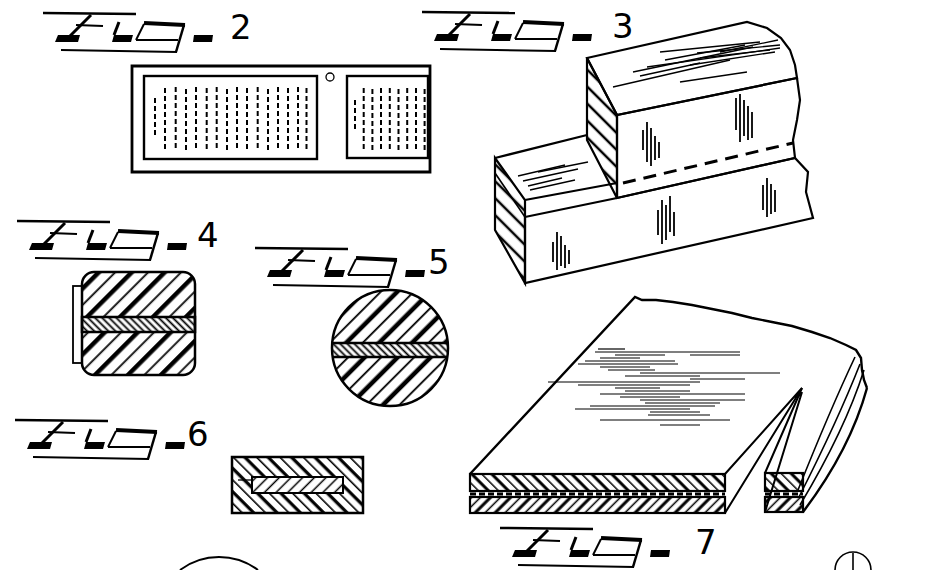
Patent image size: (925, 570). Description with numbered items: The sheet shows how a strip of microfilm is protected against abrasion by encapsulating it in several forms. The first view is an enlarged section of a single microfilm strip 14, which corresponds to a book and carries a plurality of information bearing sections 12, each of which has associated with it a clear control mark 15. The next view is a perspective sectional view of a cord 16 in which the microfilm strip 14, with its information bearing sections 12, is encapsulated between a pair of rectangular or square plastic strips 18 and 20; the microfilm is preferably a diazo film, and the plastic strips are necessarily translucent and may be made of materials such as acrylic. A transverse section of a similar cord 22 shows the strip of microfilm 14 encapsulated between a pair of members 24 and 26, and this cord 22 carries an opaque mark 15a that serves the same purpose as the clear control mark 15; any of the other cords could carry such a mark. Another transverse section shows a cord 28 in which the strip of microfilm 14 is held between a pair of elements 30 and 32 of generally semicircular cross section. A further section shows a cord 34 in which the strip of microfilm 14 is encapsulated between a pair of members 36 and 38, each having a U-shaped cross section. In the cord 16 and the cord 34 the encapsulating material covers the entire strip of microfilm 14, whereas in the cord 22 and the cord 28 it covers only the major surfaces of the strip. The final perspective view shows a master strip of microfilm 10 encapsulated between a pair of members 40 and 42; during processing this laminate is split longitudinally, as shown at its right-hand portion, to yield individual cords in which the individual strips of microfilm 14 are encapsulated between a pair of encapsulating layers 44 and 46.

In FIG. 7, the master strip of microfilm 10 is at (648, 432).
In FIG. 2, the information bearing sections 12 is at (161, 155).
In FIG. 2, the microfilm strip 14 is at (133, 148).
In FIG. 3, the microfilm strip 14 is at (548, 130).
In FIG. 4, the microfilm strip 14 is at (196, 326).
In FIG. 5, the microfilm strip 14 is at (447, 347).
In FIG. 6, the microfilm strip 14 is at (364, 462).
In FIG. 7, the microfilm strip 14 is at (800, 497).
In FIG. 2, the clear control mark 15 is at (333, 72).
In FIG. 4, the opaque mark 15a is at (77, 348).
In FIG. 3, the cord 16 is at (631, 152).
In FIG. 3, the plastic strip 18 is at (505, 211).
In FIG. 3, the plastic strip 20 is at (587, 107).
In FIG. 4, the cord 22 is at (128, 329).
In FIG. 4, the member 24 is at (196, 359).
In FIG. 4, the member 26 is at (197, 297).
In FIG. 5, the cord 28 is at (385, 348).
In FIG. 5, the semicircular cross section element 30 is at (420, 387).
In FIG. 5, the semicircular cross section element 32 is at (413, 318).
In FIG. 6, the cord 34 is at (287, 465).
In FIG. 6, the U-shaped member 36 is at (247, 497).
In FIG. 6, the U-shaped member 38 is at (305, 463).
In FIG. 7, the encapsulating member 40 is at (490, 507).
In FIG. 7, the encapsulating member 42 is at (470, 483).
In FIG. 7, the encapsulating layer 44 is at (783, 507).
In FIG. 7, the encapsulating layer 46 is at (820, 476).